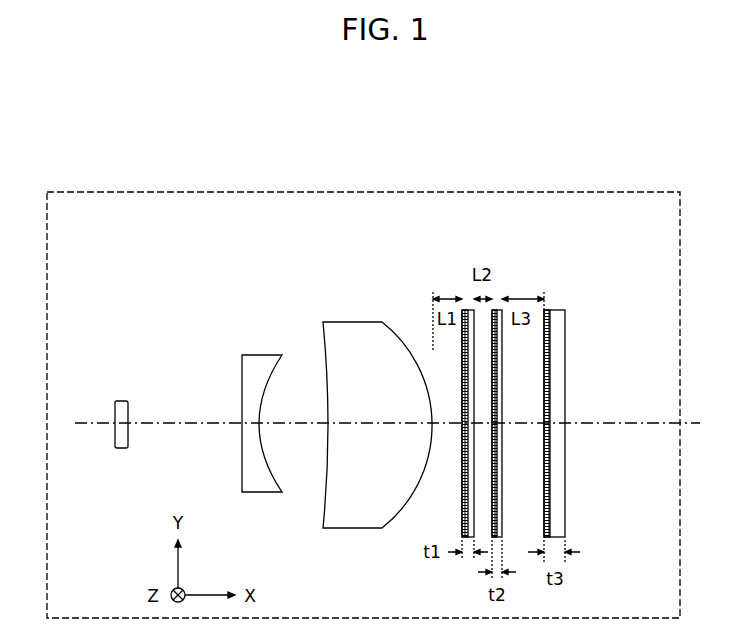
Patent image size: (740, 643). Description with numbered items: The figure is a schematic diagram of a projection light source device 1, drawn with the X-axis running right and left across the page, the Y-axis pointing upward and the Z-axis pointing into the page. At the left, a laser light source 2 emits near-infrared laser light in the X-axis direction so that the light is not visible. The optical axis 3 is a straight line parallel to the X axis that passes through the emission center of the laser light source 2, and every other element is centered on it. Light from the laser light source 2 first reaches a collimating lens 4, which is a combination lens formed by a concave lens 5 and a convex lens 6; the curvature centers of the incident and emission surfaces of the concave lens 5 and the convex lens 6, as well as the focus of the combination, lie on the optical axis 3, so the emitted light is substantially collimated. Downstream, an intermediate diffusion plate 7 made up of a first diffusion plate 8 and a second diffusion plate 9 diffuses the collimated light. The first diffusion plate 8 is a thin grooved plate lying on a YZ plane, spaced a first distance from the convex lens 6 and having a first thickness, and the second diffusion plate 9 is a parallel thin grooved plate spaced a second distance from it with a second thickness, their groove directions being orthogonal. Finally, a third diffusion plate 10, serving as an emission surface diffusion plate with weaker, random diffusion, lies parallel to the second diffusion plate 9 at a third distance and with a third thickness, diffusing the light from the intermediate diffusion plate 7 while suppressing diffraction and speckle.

The projection light source device 1 is at (580, 192).
The laser light source 2 is at (122, 401).
The optical axis 3 is at (177, 415).
The collimating lens 4 is at (365, 254).
The concave lens 5 is at (257, 366).
The convex lens 6 is at (353, 338).
The intermediate diffusion plate 7 is at (433, 234).
The first diffusion plate 8 is at (465, 310).
The second diffusion plate 9 is at (498, 310).
The third diffusion plate 10 is at (553, 318).